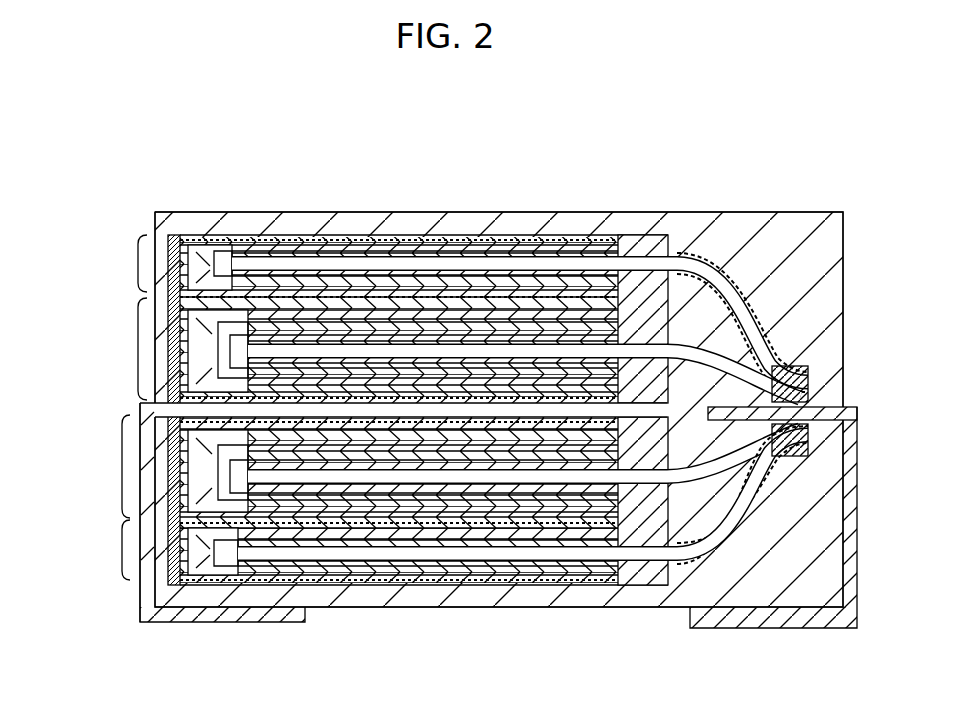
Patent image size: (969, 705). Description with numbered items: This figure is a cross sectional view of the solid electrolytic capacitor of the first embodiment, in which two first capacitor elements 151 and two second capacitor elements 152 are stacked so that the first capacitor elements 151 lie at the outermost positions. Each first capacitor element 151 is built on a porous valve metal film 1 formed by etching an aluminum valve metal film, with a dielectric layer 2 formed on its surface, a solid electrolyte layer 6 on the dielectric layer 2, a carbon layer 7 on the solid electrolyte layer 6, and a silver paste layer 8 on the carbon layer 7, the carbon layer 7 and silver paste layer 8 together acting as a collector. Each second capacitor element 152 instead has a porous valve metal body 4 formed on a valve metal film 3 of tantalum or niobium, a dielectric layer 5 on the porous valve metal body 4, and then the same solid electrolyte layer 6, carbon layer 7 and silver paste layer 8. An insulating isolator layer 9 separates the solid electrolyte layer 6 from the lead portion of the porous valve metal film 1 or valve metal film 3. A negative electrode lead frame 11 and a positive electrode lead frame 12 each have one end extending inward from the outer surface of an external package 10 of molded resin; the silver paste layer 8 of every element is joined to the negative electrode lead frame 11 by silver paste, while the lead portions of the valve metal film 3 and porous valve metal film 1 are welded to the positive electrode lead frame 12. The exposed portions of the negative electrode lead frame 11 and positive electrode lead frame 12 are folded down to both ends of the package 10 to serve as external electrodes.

The porous valve metal film 1 is at (463, 587).
The dielectric layer 2 is at (303, 237).
The valve metal film 3 is at (170, 482).
The porous valve metal body 4 is at (172, 320).
The dielectric layer 5 is at (172, 370).
The solid electrolyte layer 6 is at (227, 240).
The carbon layer 7 is at (185, 237).
The silver paste layer 8 is at (165, 265).
The insulating isolator layer 9 is at (663, 237).
The external package 10 is at (467, 223).
The negative electrode lead frame 11 is at (145, 575).
The positive electrode lead frame 12 is at (845, 580).
The first capacitor element 151 is at (138, 267).
The second capacitor element 152 is at (137, 345).